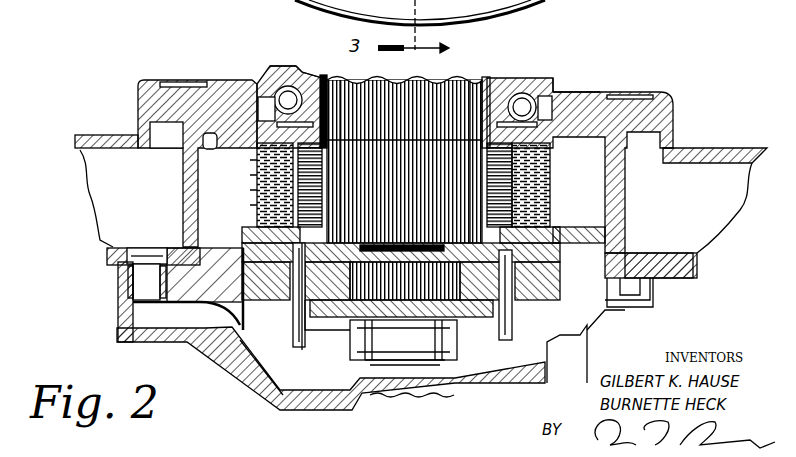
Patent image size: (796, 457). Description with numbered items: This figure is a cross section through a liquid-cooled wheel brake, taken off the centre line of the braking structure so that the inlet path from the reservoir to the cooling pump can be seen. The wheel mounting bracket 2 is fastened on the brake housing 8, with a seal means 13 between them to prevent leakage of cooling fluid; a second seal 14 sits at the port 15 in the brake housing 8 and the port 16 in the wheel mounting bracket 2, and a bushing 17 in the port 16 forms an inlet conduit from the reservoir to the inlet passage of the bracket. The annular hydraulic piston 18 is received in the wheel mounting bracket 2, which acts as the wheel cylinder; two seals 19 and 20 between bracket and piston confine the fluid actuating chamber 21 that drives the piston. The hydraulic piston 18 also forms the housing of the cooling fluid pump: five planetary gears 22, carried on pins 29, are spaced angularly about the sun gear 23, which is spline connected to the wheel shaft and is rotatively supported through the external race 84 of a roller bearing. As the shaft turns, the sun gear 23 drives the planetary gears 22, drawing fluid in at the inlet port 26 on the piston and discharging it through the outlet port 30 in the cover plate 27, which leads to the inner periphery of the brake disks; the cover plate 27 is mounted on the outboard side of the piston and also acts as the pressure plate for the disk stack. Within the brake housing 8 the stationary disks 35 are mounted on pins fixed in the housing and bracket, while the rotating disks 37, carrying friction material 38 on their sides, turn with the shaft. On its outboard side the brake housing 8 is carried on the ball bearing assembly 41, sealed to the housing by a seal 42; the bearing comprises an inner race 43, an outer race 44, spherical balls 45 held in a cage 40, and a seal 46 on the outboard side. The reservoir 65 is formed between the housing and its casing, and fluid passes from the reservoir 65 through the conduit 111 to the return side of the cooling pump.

The wheel mounting bracket 2 is at (228, 380).
The brake housing 8 is at (668, 282).
The seal means 13 is at (178, 303).
The second seal 14 is at (118, 283).
The port 15 is at (145, 247).
The port 16 is at (130, 318).
The bushing 17 is at (128, 297).
The hydraulic piston 18 is at (302, 352).
The seal 19 is at (567, 354).
The seal 20 is at (570, 262).
The fluid actuating chamber 21 is at (596, 336).
The planetary gears 22 is at (250, 240).
The sun gear 23 is at (403, 340).
The inlet port 26 is at (330, 332).
The cover plate 27 is at (333, 243).
The pins 29 is at (298, 348).
The outlet port 30 is at (480, 243).
The stationary disks 35 is at (556, 161).
The rotating disks 37 is at (556, 186).
The friction material 38 is at (256, 191).
The cage 40 is at (405, 150).
The ball bearing assembly 41 is at (276, 90).
The seal 42 is at (568, 100).
The inner race 43 is at (301, 72).
The outer race 44 is at (545, 90).
The spherical balls 45 is at (522, 98).
The seal 46 is at (290, 66).
The reservoir 65 is at (712, 152).
The external race 84 is at (375, 362).
The conduit 111 is at (252, 390).